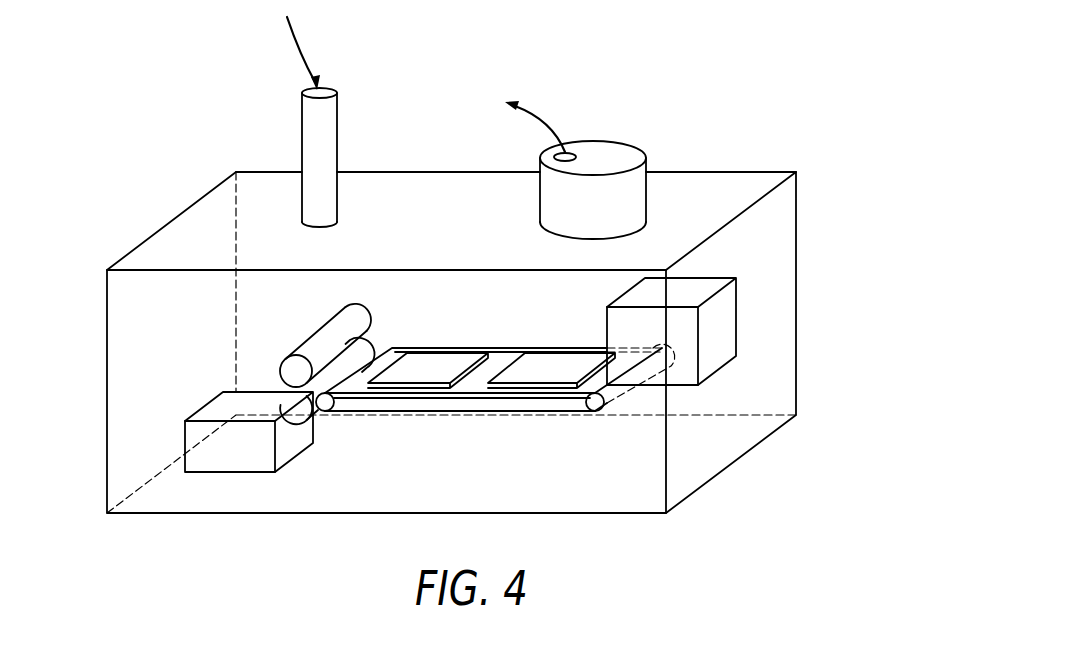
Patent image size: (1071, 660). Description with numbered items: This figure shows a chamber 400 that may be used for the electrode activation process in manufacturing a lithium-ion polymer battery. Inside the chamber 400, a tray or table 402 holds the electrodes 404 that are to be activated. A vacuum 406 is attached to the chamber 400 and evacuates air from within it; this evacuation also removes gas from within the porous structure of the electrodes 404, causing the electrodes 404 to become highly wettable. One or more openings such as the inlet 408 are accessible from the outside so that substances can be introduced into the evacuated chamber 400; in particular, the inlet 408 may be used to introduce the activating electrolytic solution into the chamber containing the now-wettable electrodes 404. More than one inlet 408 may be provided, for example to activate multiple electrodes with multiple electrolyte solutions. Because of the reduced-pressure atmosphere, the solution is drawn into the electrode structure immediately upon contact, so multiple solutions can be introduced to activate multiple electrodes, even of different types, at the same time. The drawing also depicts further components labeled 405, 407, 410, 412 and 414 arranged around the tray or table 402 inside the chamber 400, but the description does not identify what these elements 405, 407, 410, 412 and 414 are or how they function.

The chamber 400 is at (655, 52).
The tray or table 402 is at (348, 403).
The electrodes 404 is at (408, 383).
The nip rollers 405 is at (310, 350).
The vacuum 406 is at (622, 155).
The conveyor roller 407 is at (292, 420).
The inlet 408 is at (302, 157).
The drive unit 410 is at (718, 337).
The conveyor platform 412 is at (462, 394).
The control box 414 is at (186, 432).